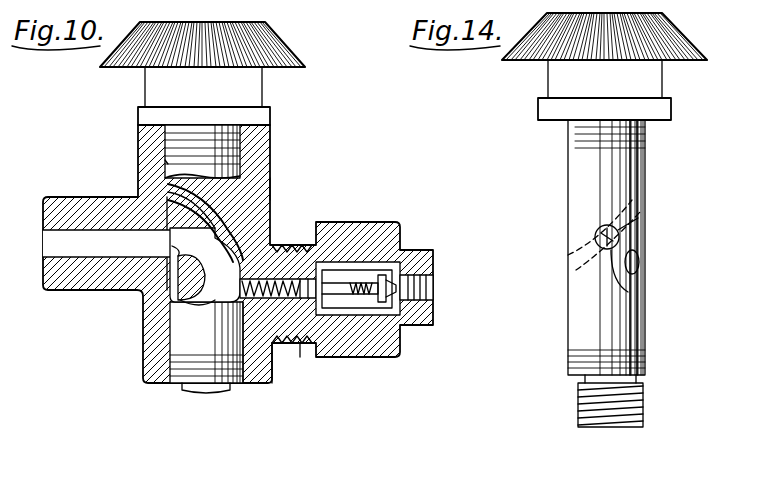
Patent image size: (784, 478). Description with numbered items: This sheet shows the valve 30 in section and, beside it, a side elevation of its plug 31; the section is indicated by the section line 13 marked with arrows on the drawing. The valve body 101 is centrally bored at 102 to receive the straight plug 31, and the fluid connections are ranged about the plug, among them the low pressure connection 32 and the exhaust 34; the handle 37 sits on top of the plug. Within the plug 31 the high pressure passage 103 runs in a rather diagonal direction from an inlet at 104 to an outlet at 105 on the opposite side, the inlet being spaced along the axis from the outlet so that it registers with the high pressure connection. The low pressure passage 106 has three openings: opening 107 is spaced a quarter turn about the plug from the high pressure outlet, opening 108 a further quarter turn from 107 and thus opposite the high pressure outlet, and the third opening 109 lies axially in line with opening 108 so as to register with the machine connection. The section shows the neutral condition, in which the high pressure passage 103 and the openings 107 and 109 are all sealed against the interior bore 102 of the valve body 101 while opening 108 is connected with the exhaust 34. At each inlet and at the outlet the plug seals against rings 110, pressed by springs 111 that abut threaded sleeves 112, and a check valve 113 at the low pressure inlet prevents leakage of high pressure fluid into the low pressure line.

In FIG. 10, the section line 13 is at (50, 243).
In FIG. 10, the valve 30 is at (262, 188).
In FIG. 10, the plug 31 is at (240, 208).
In FIG. 14, the plug 31 is at (646, 162).
In FIG. 10, the low pressure connection 32 is at (284, 350).
In FIG. 10, the exhaust 34 is at (50, 202).
In FIG. 10, the handle 37 is at (300, 49).
In FIG. 14, the handle 37 is at (700, 46).
In FIG. 10, the valve body 101 is at (258, 143).
In FIG. 10, the bore 102 is at (168, 160).
In FIG. 10, the high pressure passage 103 is at (235, 190).
In FIG. 10, the inlet 104 is at (176, 192).
In FIG. 14, the inlet 104 is at (634, 203).
In FIG. 10, the outlet 105 is at (300, 285).
In FIG. 14, the outlet 105 is at (570, 262).
In FIG. 10, the low pressure passage 106 is at (143, 300).
In FIG. 14, the opening 107 is at (598, 242).
In FIG. 10, the opening 108 is at (118, 292).
In FIG. 14, the opening 108 is at (644, 237).
In FIG. 10, the third opening 109 is at (150, 322).
In FIG. 14, the third opening 109 is at (644, 285).
In FIG. 10, the rings 110 is at (255, 350).
In FIG. 10, the springs 111 is at (298, 355).
In FIG. 10, the threaded sleeves 112 is at (340, 357).
In FIG. 10, the check valve 113 is at (402, 345).